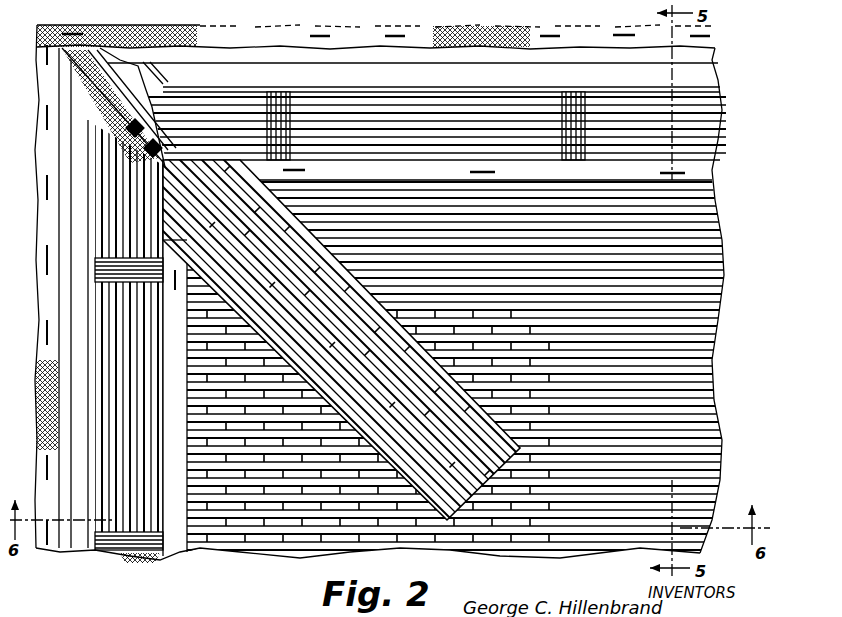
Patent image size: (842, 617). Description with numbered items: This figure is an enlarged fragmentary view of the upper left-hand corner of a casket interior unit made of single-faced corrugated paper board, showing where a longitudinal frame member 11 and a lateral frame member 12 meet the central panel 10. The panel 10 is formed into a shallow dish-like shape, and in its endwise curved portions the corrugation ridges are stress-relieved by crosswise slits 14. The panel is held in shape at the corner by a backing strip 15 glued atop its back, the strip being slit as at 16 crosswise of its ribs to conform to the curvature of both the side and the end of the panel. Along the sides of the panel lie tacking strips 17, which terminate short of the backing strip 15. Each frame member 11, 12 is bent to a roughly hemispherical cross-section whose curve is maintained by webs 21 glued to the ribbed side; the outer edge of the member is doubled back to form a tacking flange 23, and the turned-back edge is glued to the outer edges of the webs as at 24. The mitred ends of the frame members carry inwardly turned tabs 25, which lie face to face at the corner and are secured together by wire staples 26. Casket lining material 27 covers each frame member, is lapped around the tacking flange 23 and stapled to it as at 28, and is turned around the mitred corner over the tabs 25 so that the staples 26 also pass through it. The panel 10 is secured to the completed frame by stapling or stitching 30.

The central panel 10 is at (672, 307).
The longitudinal frame member 11 is at (537, 125).
The lateral frame member 12 is at (130, 315).
The crosswise slit 14 is at (248, 537).
The backing strip 15 is at (437, 463).
The slit 16 is at (213, 297).
The tacking strip 17 is at (693, 177).
The web 21 is at (283, 90).
The tacking flange 23 is at (703, 62).
The glued turned-back edge 24 is at (697, 82).
The tab 25 is at (165, 108).
The wire staple 26 is at (103, 45).
The casket lining material 27 is at (135, 33).
The staple 28 is at (250, 34).
The stapling or stitching 30 is at (495, 173).